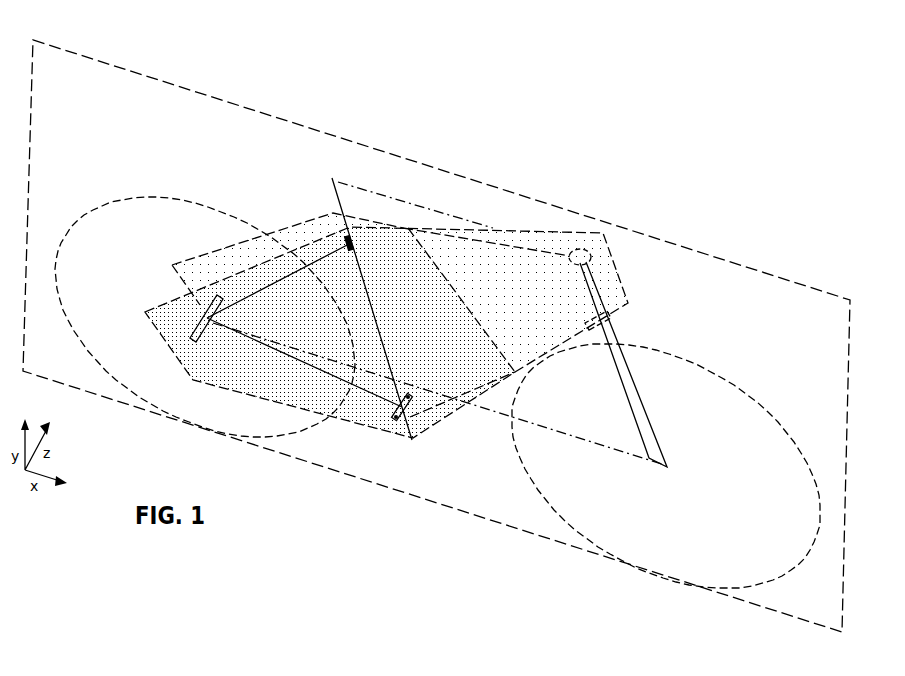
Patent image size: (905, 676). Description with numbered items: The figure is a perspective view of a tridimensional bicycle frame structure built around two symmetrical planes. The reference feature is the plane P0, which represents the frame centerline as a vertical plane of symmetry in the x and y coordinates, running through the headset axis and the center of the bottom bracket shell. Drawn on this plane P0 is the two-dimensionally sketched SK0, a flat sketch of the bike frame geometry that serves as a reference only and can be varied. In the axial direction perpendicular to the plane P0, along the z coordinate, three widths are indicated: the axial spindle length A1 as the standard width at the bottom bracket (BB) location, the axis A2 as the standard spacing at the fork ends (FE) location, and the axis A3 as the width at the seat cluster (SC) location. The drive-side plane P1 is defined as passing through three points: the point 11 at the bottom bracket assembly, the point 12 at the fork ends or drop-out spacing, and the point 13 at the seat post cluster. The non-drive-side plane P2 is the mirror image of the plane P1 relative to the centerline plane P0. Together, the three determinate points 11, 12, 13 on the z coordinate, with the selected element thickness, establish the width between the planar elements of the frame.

The plane P0 is at (193, 88).
The plane P1 is at (150, 306).
The plane P2 is at (218, 246).
The two-dimensionally sketched SK0 is at (338, 203).
The point at bottom bracket assembly 11 is at (395, 418).
The point at fork ends spacing 12 is at (193, 342).
The point at seat post cluster 13 is at (345, 243).
The axial spindle length A1 is at (407, 425).
The axis at fork ends A2 is at (205, 319).
The axis at seat cluster A3 is at (352, 238).